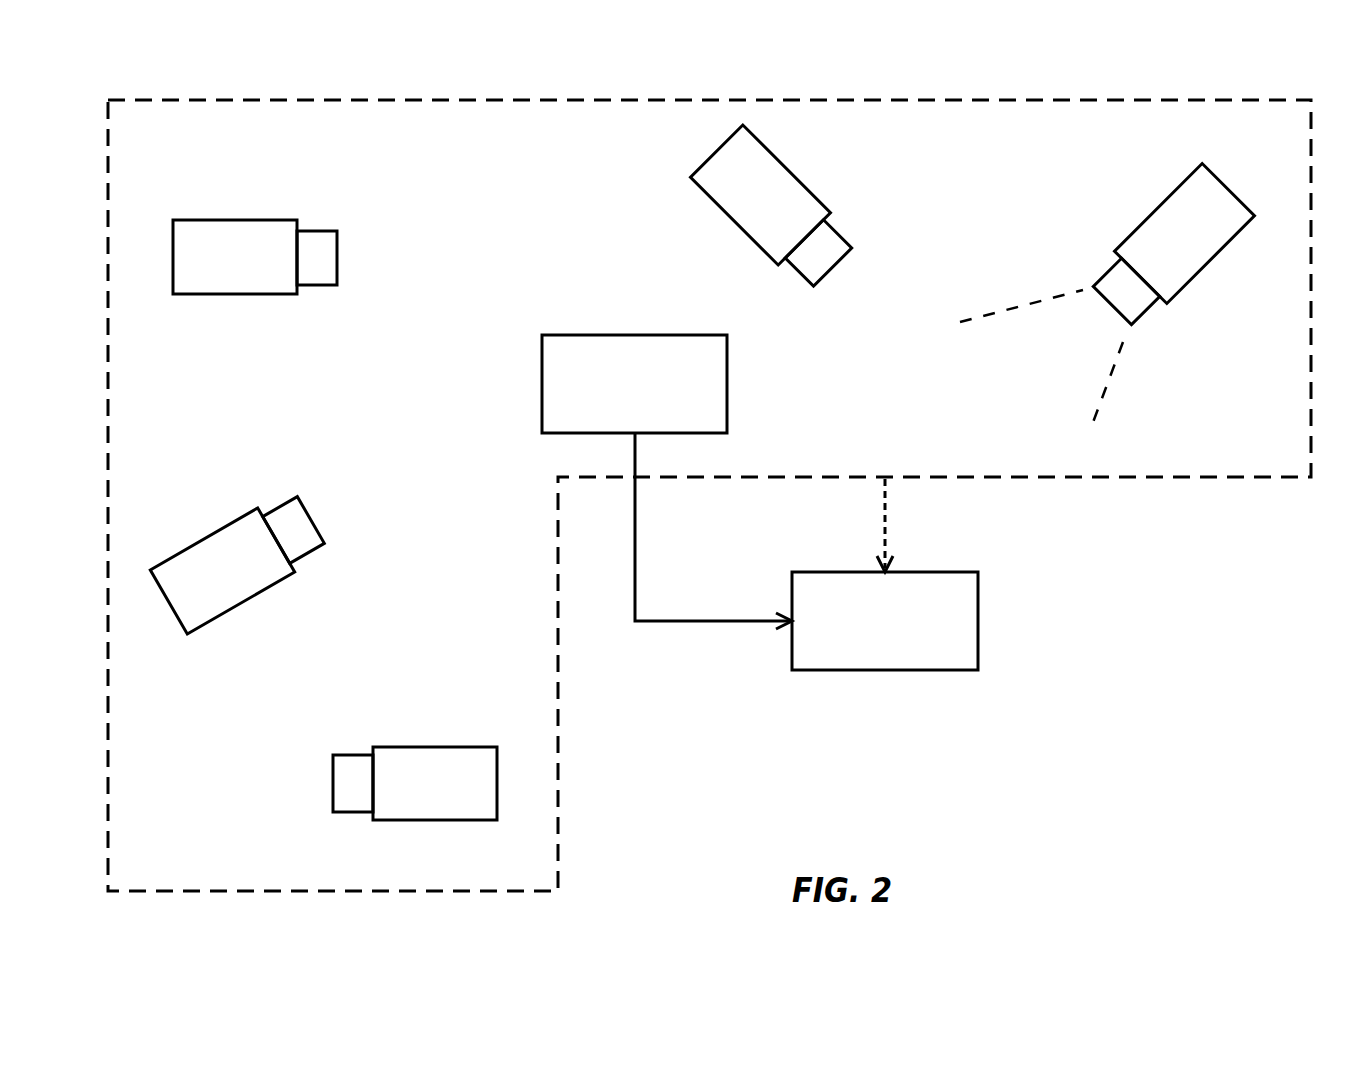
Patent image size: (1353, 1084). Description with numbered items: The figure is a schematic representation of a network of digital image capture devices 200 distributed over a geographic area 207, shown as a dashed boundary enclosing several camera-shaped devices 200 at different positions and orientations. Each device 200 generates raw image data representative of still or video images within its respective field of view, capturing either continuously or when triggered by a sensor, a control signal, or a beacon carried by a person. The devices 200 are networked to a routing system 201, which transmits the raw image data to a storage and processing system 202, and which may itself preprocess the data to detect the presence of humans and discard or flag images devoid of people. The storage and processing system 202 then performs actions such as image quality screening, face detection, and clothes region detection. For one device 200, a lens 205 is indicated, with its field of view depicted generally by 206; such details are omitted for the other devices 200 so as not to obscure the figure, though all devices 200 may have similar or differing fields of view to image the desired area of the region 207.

The digital image capture device 200 is at (213, 270).
The routing system 201 is at (613, 396).
The storage and processing system 202 is at (864, 634).
The lens 205 is at (1118, 285).
The field of view 206 is at (1037, 367).
The geographic area 207 is at (139, 145).